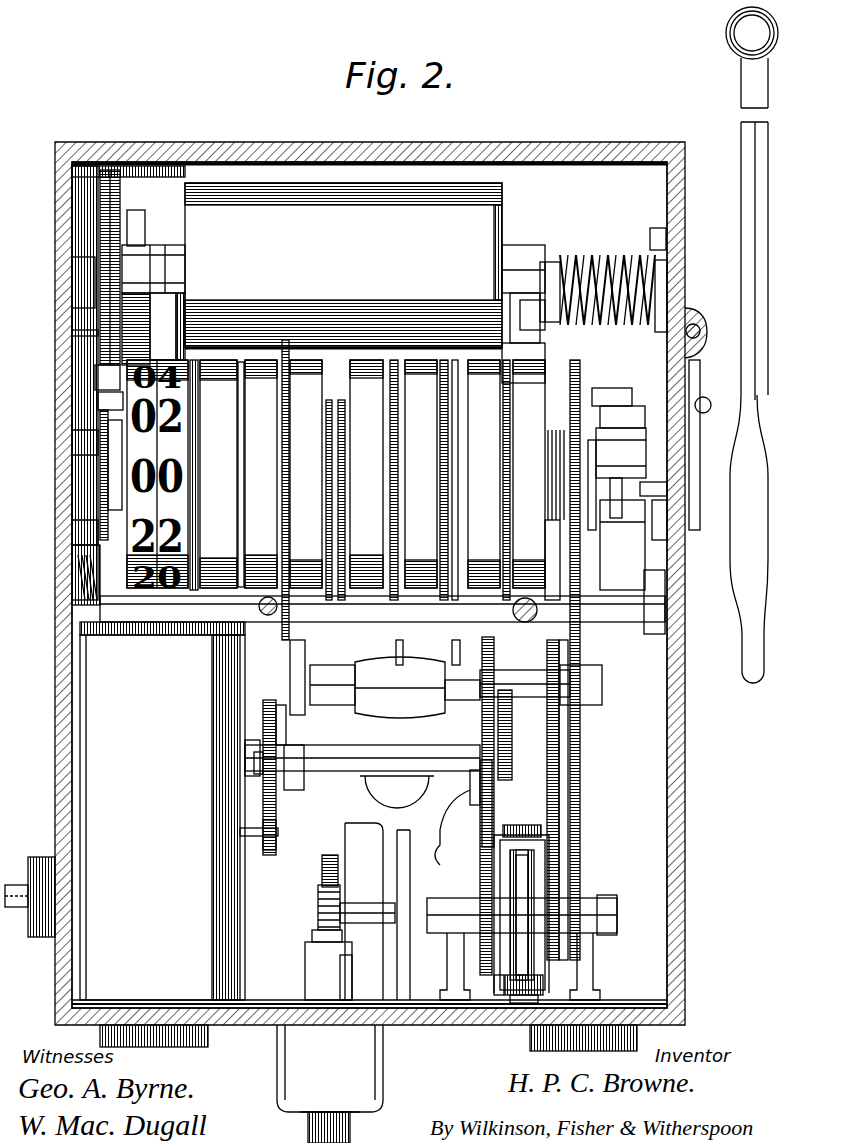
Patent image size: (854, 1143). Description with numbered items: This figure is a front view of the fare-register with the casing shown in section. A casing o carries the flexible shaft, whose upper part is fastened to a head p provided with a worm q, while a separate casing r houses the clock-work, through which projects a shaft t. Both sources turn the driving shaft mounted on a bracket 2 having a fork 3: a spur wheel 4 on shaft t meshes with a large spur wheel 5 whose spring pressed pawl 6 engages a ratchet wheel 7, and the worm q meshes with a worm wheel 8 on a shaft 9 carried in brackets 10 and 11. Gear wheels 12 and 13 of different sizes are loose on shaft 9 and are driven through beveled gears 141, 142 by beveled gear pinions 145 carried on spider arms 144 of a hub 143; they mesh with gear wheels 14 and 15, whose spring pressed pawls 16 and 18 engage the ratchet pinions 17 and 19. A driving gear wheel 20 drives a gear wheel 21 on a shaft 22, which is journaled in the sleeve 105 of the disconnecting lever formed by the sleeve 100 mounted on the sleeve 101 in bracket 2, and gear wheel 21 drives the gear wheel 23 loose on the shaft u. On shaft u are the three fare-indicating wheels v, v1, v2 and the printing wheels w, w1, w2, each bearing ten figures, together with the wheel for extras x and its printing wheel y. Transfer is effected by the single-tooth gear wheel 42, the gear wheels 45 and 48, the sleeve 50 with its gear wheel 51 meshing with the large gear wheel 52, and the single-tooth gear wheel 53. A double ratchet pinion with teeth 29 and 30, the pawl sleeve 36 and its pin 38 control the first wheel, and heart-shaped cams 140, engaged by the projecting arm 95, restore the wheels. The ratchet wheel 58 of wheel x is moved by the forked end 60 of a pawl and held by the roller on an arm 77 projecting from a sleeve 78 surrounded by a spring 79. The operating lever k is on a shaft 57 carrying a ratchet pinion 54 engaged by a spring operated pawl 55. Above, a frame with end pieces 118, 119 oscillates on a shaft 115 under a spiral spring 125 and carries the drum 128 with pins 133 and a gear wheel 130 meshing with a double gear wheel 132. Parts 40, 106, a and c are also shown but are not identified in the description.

The bracket 2 is at (406, 900).
The fork 3 is at (18, 884).
The spur wheel 4 is at (276, 812).
The large spur wheel 5 is at (268, 712).
The spring pressed pawl 6 is at (262, 725).
The ratchet wheel 7 is at (254, 757).
The worm wheel 8 is at (340, 866).
The shaft 9 is at (356, 905).
The bracket 10 is at (600, 966).
The bracket 11 is at (450, 962).
The gear wheel 12 is at (552, 882).
The gear wheel 13 is at (484, 878).
The gear wheel 14 is at (562, 820).
The gear wheel 15 is at (476, 810).
The spring pressed pawl 16 is at (585, 710).
The toothed ratchet pinion 17 is at (428, 847).
The spring pressed pawl 18 is at (494, 700).
The pinion 19 is at (467, 787).
The driving gear wheel 20 is at (582, 790).
The gear wheel 21 is at (578, 690).
The shaft 22 is at (516, 690).
The gear wheel 23 is at (599, 497).
The teeth 29 is at (600, 450).
The teeth 30 is at (616, 478).
The sleeve 36 is at (619, 406).
The pin 38 is at (612, 387).
The pin 40 is at (525, 588).
The gear wheel 42 is at (510, 520).
The gear wheel 45 is at (565, 622).
The gear wheel 48 is at (450, 702).
The sleeve 50 is at (415, 646).
The gear wheel 51 is at (436, 653).
The large gear wheel 52 is at (390, 604).
The gear wheel 53 is at (395, 358).
The ratchet pinion 54 is at (655, 512).
The spring operated pawl 55 is at (655, 405).
The shaft 57 is at (640, 490).
The ratchet wheel 58 is at (104, 478).
The forked end 60 is at (105, 400).
The arm 77 is at (98, 555).
The sleeve 78 is at (165, 618).
The spring 79 is at (85, 588).
The projecting arm 95 is at (197, 355).
The sleeve 100 is at (278, 836).
The sleeve 101 is at (375, 700).
The sleeve 105 is at (285, 790).
The plate 106 is at (302, 648).
The shaft 115 is at (612, 262).
The end piece 118 is at (525, 316).
The end piece 119 is at (158, 318).
The spiral spring 125 is at (552, 262).
The drum 128 is at (343, 265).
The gear wheel 130 is at (125, 170).
The double gear wheel 132 is at (110, 378).
The pins 133 is at (235, 185).
The heart-shaped cams 140 is at (335, 358).
The beveled gear 141 is at (545, 852).
The beveled gear 142 is at (492, 988).
The hub 143 is at (530, 905).
The spider arms 144 is at (538, 962).
The beveled gear pinions 145 is at (515, 1008).
The rod a is at (609, 800).
The ring c is at (705, 397).
The operating lever k is at (742, 237).
The casing o is at (350, 990).
The head p is at (320, 950).
The worm q is at (318, 905).
The casing r is at (92, 740).
The shaft t is at (238, 832).
The shaft u is at (618, 545).
The fare-indicating wheel v is at (545, 368).
The fare-indicating wheel v1 is at (421, 356).
The fare-indicating wheel v2 is at (313, 356).
The printing wheel w is at (481, 356).
The printing wheel w1 is at (372, 356).
The printing wheel w2 is at (268, 356).
The wheel for extras x is at (135, 505).
The printing wheel for extras y is at (215, 358).